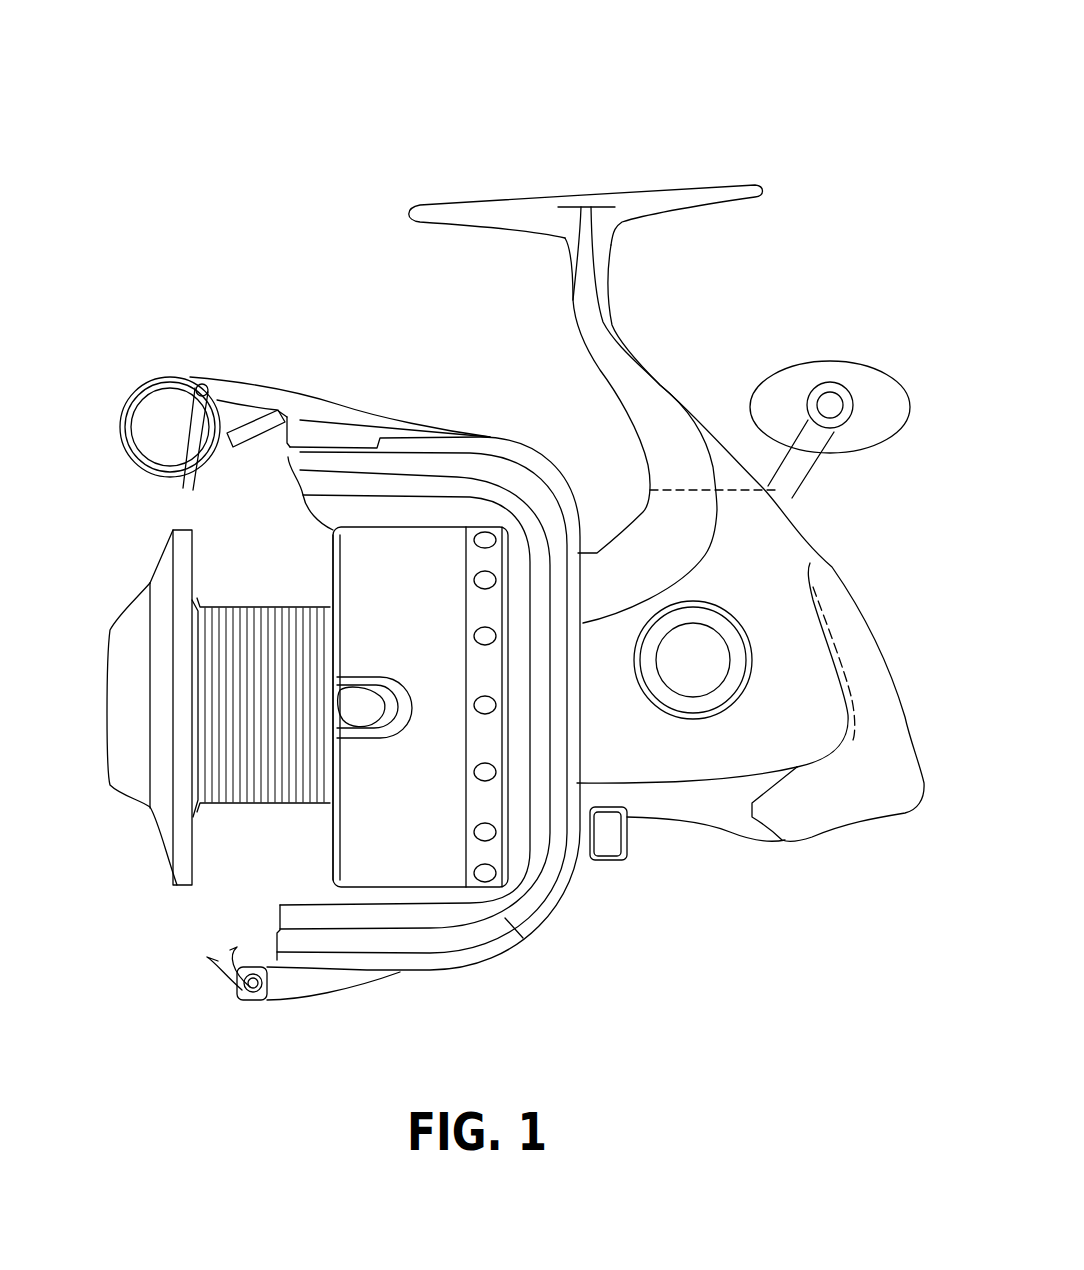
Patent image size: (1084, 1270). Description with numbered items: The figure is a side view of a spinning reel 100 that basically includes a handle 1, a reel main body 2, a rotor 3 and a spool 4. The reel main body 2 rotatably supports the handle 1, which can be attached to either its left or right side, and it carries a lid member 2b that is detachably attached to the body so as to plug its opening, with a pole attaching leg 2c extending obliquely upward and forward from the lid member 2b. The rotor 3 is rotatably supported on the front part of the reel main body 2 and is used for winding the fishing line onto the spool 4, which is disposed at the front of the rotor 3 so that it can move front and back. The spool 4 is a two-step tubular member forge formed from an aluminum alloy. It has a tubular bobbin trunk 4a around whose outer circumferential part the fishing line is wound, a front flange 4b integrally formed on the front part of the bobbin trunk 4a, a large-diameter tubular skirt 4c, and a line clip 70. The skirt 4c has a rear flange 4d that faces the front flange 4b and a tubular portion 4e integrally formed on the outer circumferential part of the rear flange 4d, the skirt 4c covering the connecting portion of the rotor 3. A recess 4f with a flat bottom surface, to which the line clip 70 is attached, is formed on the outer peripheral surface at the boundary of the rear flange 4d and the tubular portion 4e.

The spinning reel 100 is at (578, 138).
The handle 1 is at (835, 380).
The reel main body 2 is at (703, 362).
The lid member 2b is at (777, 567).
The pole attaching leg 2c is at (605, 300).
The rotor 3 is at (520, 937).
The spool 4 is at (233, 817).
The bobbin trunk 4a is at (281, 617).
The front flange 4b is at (180, 527).
The skirt 4c is at (390, 516).
The rear flange 4d is at (330, 600).
The tubular portion 4e is at (423, 537).
The recess 4f is at (340, 705).
The line clip 70 is at (373, 712).